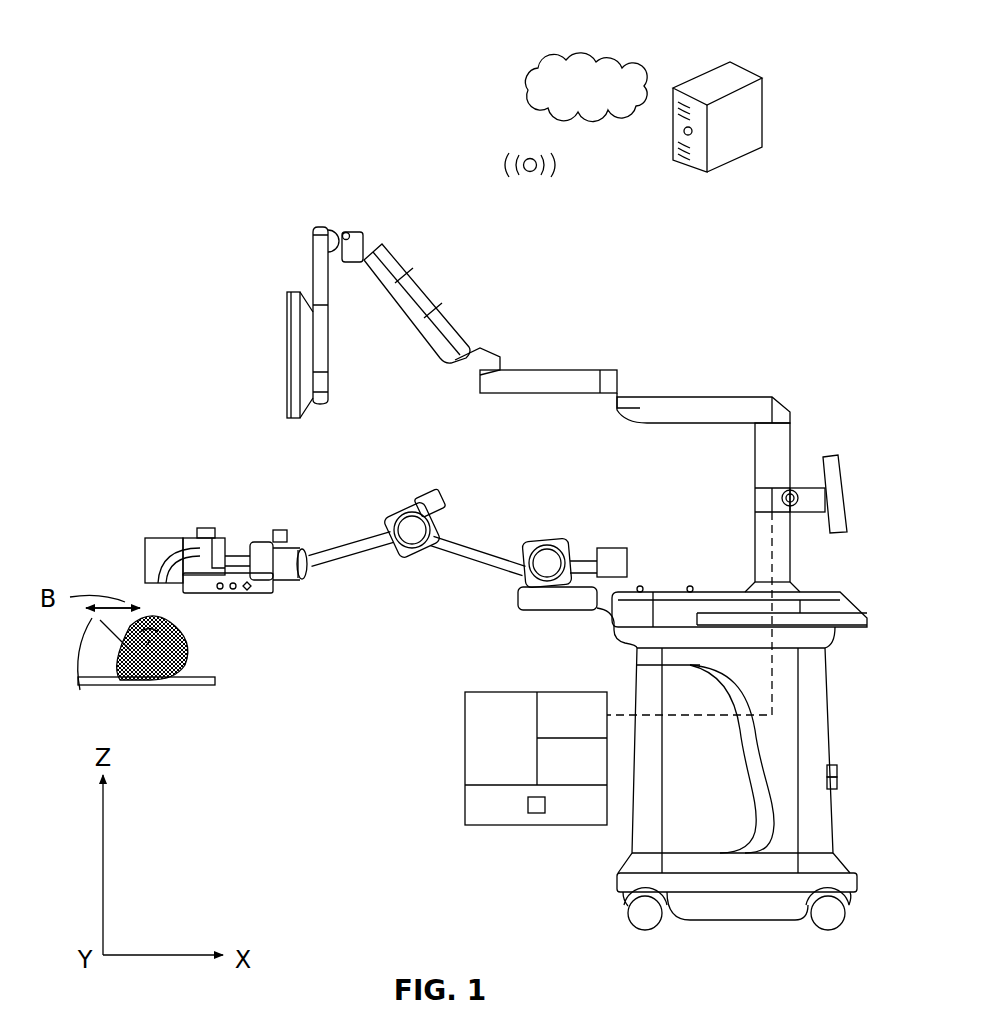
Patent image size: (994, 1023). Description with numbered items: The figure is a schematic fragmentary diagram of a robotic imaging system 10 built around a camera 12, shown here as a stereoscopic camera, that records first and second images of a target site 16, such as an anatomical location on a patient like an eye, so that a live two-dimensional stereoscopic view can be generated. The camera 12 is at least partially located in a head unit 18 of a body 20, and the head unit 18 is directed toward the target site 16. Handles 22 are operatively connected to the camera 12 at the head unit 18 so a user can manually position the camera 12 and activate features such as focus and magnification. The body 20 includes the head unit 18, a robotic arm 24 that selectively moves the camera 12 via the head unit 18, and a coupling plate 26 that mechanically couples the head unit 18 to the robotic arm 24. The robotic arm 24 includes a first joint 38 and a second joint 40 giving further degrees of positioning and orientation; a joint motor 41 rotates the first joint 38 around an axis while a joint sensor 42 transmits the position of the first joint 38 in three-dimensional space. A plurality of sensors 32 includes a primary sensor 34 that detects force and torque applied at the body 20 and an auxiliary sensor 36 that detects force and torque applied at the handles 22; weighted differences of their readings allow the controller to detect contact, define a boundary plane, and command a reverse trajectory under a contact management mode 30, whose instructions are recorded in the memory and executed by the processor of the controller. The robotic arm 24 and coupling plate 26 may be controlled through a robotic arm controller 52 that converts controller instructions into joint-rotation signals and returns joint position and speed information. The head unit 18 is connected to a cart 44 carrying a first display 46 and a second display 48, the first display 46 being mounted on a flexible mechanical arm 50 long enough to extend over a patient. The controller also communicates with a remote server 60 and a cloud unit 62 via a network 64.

The robotic imaging system 10 is at (238, 188).
The camera 12 is at (198, 522).
The target site 16 is at (162, 622).
The head unit 18 is at (155, 540).
The body 20 is at (612, 318).
The handles 22 is at (162, 545).
The robotic arm 24 is at (372, 520).
The coupling plate 26 is at (250, 592).
The contact management mode 30 is at (536, 815).
The sensors 32 is at (238, 493).
The primary sensor 34 is at (283, 540).
The auxiliary sensor 36 is at (208, 528).
The first joint 38 is at (410, 572).
The second joint 40 is at (554, 530).
The joint motor 41 is at (420, 498).
The joint sensor 42 is at (437, 503).
The cart 44 is at (838, 690).
The first display 46 is at (258, 343).
The second display 48 is at (852, 497).
The flexible mechanical arm 50 is at (432, 266).
The robotic arm controller 52 is at (630, 562).
The remote server 60 is at (756, 77).
The cloud unit 62 is at (558, 52).
The network 64 is at (511, 149).